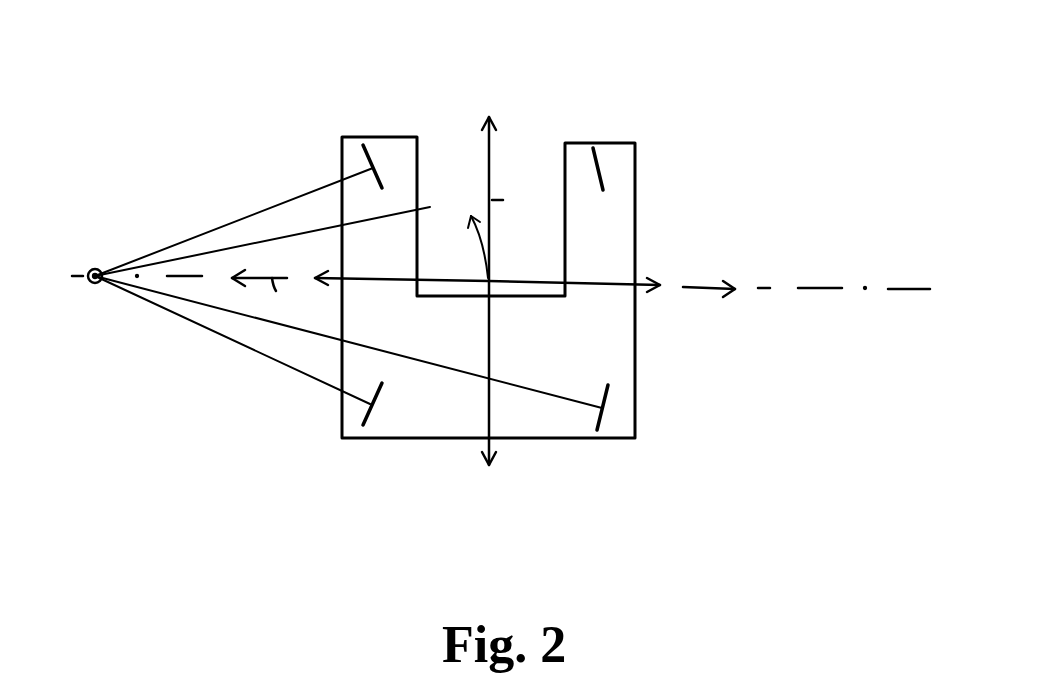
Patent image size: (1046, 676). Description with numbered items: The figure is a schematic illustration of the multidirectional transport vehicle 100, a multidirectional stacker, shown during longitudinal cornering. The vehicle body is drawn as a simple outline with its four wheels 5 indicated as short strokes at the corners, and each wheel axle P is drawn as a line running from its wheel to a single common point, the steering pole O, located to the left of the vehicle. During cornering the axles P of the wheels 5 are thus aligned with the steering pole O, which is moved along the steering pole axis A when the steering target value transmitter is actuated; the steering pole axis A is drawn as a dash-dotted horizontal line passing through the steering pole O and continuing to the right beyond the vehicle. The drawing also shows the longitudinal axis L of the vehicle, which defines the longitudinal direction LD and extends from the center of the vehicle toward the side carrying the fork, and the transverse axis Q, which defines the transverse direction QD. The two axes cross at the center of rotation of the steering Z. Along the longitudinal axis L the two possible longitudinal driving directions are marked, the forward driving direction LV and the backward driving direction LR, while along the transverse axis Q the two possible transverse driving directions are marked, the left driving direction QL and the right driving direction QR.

The multidirectional transport vehicle 100 is at (735, 74).
The wheels 5 is at (383, 168).
The steering pole O is at (93, 293).
The wheel axle P is at (252, 212).
The transverse axis Q is at (600, 283).
The left driving direction QL is at (273, 294).
The right driving direction QR is at (703, 287).
The transverse direction QD is at (615, 288).
The longitudinal axis L is at (595, 178).
The forward driving direction LV is at (490, 38).
The longitudinal direction LD is at (492, 152).
The backward driving direction LR is at (488, 482).
The center of rotation of the steering Z is at (493, 276).
The steering pole axis A is at (908, 288).